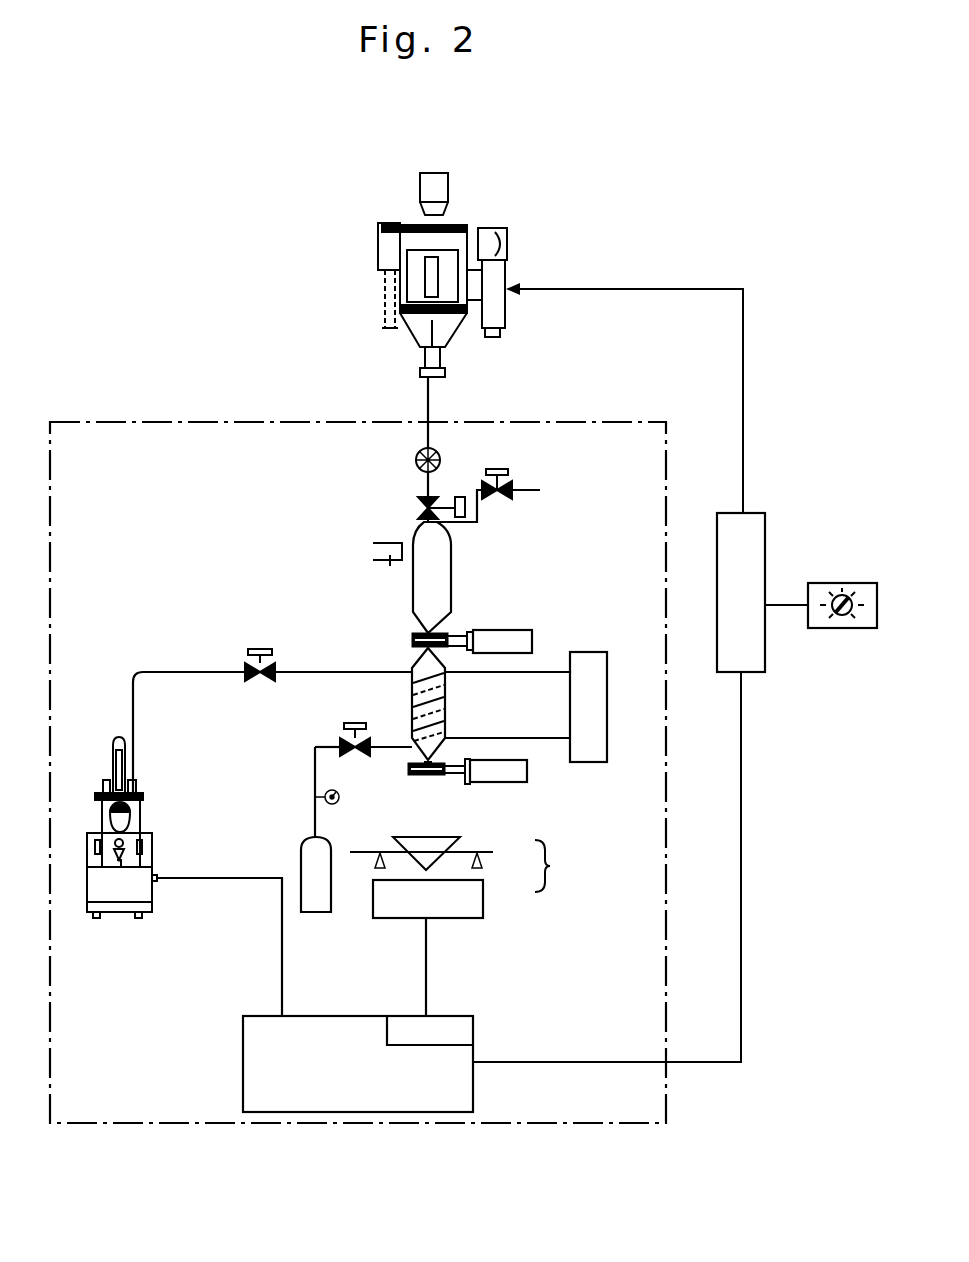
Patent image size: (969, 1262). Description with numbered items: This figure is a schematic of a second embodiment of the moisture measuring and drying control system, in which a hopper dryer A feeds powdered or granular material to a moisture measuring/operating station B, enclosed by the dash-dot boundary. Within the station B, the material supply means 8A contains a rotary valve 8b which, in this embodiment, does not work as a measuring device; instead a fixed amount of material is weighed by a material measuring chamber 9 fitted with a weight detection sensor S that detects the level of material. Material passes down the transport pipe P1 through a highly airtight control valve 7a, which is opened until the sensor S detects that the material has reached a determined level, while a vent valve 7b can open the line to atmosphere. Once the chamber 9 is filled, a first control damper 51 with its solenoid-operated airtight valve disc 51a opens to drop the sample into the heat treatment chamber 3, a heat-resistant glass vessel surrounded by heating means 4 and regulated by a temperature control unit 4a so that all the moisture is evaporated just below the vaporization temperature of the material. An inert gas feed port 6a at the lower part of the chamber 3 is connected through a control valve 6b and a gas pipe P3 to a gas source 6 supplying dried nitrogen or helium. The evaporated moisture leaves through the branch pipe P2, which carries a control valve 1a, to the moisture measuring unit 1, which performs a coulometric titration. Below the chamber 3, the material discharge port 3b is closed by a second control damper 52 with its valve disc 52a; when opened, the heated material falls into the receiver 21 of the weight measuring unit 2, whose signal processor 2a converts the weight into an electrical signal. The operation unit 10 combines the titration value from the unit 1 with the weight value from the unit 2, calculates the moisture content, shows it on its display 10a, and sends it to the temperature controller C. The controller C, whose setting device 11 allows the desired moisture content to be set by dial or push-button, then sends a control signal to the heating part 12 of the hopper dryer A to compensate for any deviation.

The hopper dryer A is at (376, 211).
The moisture measuring/operating station B is at (150, 420).
The temperature controller C is at (760, 515).
The heating part 12 is at (505, 281).
The setting device 11 is at (851, 584).
The transport pipe P1 is at (437, 404).
The material supply means 8A is at (483, 441).
The rotary valve 8b is at (415, 460).
The control valve 7a is at (420, 505).
The vent valve 7b is at (512, 488).
The material measuring chamber 9 is at (452, 558).
The weight detection sensor S is at (387, 572).
The first control damper 51 is at (503, 637).
The valve disc 51a is at (412, 641).
The heat treatment chamber 3 is at (448, 693).
The heating means 4 is at (448, 722).
The material discharge port 3b is at (430, 777).
The second control damper 52 is at (523, 779).
The valve disc 52a is at (409, 771).
The temperature control unit 4a is at (607, 722).
The branch pipe P2 is at (317, 672).
The control valve 1a is at (263, 649).
The control valve 6b is at (352, 723).
The inert gas feed port 6a is at (392, 745).
The gas pipe P3 is at (314, 771).
The gas source 6 is at (312, 865).
The moisture measuring unit 1 is at (136, 816).
The receiver 21 is at (458, 842).
The weight measuring unit 2 is at (551, 866).
The signal processor 2a is at (480, 899).
The operation unit 10 is at (352, 1026).
The display 10a is at (465, 1030).